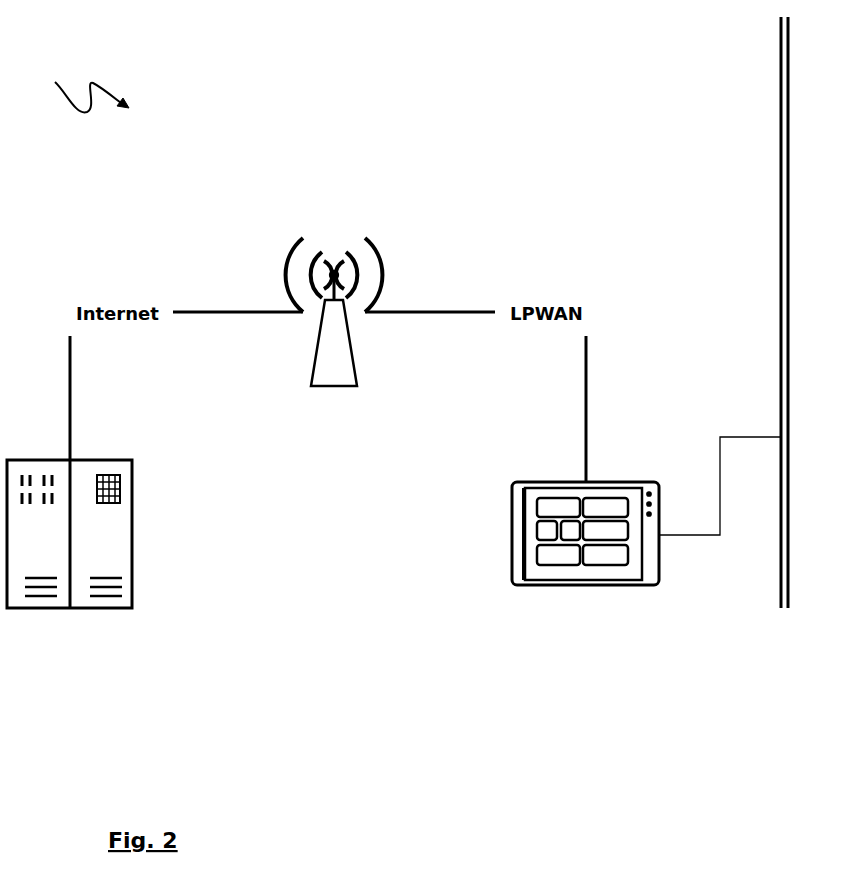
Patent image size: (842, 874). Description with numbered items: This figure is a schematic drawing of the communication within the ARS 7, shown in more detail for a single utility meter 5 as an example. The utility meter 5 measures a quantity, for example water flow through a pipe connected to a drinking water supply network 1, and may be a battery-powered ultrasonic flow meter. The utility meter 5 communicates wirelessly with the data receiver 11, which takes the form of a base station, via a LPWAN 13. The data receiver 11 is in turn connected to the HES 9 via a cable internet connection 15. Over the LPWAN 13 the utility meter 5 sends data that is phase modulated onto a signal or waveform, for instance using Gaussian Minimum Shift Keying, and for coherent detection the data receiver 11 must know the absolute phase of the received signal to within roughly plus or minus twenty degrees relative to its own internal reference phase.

The ARS 7 is at (83, 84).
The drinking water supply network 1 is at (780, 366).
The utility meter 5 is at (512, 508).
The HES 9 is at (132, 547).
The data receiver 11 is at (320, 337).
The LPWAN 13 is at (585, 422).
The cable internet connection 15 is at (69, 417).